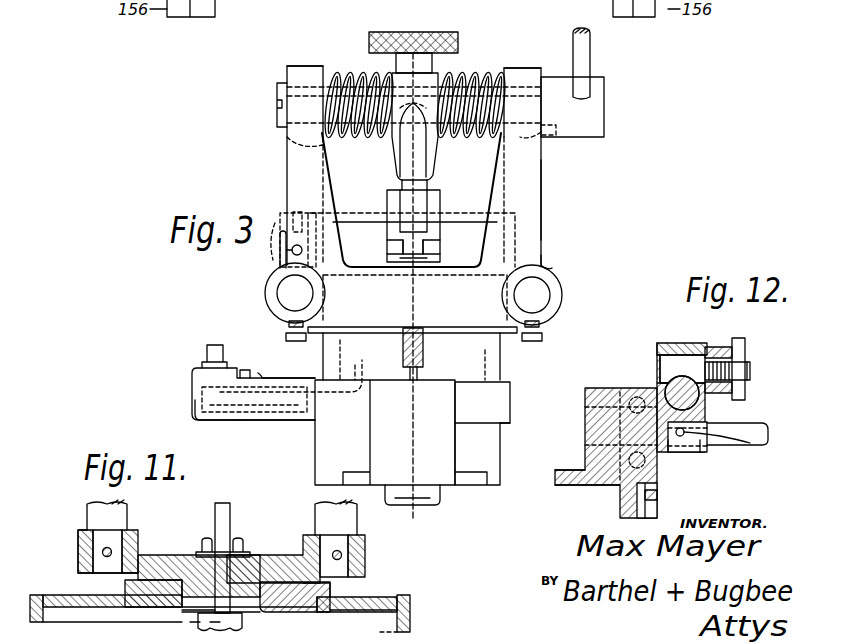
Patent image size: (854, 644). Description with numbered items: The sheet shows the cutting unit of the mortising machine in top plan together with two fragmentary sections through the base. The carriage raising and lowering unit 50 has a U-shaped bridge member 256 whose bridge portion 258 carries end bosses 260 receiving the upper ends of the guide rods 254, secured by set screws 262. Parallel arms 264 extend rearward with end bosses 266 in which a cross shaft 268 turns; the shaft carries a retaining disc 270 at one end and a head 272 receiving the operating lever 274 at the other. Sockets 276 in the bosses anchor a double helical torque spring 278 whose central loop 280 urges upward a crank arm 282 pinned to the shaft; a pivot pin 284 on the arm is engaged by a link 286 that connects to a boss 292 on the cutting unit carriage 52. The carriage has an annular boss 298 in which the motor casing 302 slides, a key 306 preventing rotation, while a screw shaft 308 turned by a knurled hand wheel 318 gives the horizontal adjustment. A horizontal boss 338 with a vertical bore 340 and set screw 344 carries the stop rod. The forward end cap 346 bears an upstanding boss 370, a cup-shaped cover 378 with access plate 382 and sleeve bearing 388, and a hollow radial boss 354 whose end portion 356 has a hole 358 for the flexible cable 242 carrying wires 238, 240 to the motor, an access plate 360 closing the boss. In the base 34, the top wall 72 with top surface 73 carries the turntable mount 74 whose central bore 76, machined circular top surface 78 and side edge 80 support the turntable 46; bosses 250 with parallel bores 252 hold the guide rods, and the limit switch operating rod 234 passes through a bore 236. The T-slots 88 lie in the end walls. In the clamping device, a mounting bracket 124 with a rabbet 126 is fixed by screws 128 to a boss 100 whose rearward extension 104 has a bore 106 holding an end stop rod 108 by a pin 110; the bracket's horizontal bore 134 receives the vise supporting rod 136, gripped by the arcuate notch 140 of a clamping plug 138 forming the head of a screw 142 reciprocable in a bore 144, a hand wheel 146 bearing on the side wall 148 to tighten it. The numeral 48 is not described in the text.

In FIG. 3, the knurled hand wheel 318 is at (446, 31).
In FIG. 3, the parallel arms 264 is at (287, 186).
In FIG. 3, the end bosses 266 is at (312, 66).
In FIG. 3, the bridge member 256 is at (545, 258).
In FIG. 3, the carriage raising and lowering unit 50 is at (556, 207).
In FIG. 3, the head 272 is at (604, 106).
In FIG. 3, the operating lever 274 is at (590, 47).
In FIG. 3, the retaining disc 270 is at (277, 97).
In FIG. 3, the sockets 276 is at (295, 146).
In FIG. 3, the double helical torque spring 278 is at (358, 72).
In FIG. 3, the cross shaft 268 is at (488, 72).
In FIG. 3, the central loop 280 is at (395, 152).
In FIG. 3, the crank arm 282 is at (427, 160).
In FIG. 3, the pivot pin 284 is at (432, 187).
In FIG. 3, the link 286 is at (441, 205).
In FIG. 3, the boss 292 is at (441, 238).
In FIG. 3, the annular boss 298 is at (356, 220).
In FIG. 3, the set screw 344 is at (298, 212).
In FIG. 3, the vertical bore 340 is at (275, 235).
In FIG. 3, the horizontal boss 338 is at (282, 259).
In FIG. 3, the end bosses 260 is at (268, 314).
In FIG. 3, the guide rods 254 is at (290, 293).
In FIG. 11, the guide rods 254 is at (125, 514).
In FIG. 3, the set screws 262 is at (292, 338).
In FIG. 3, the bridge portion 258 is at (375, 327).
In FIG. 3, the screw shaft 308 is at (424, 345).
In FIG. 3, the key 306 is at (410, 373).
In FIG. 3, the motor casing 302 is at (505, 360).
In FIG. 3, the forward end cap 346 is at (511, 388).
In FIG. 3, the upstanding boss 370 is at (445, 401).
In FIG. 3, the cup-shaped cover 378 is at (498, 452).
In FIG. 3, the cutting unit carriage 52 is at (515, 429).
In FIG. 3, the access plate 382 is at (477, 486).
In FIG. 3, the cup-shaped sleeve bearing 388 is at (428, 505).
In FIG. 3, the end portion 356 is at (195, 391).
In FIG. 3, the hole 358 is at (200, 372).
In FIG. 3, the flexible cable 242 is at (207, 350).
In FIG. 3, the wire 240 is at (250, 378).
In FIG. 3, the access plate 360 is at (296, 377).
In FIG. 3, the wire 238 is at (237, 421).
In FIG. 3, the hollow radial boss 354 is at (256, 421).
In FIG. 11, the clamp assembly 48 is at (74, 503).
In FIG. 11, the bosses 250 is at (78, 537).
In FIG. 11, the parallel bores 252 is at (78, 547).
In FIG. 11, the turntable 46 is at (279, 546).
In FIG. 11, the turntable mount 74 is at (125, 587).
In FIG. 11, the bore 236 is at (202, 553).
In FIG. 11, the limit switch operating rod 234 is at (222, 505).
In FIG. 11, the machined circular top surface 78 is at (277, 612).
In FIG. 11, the side edge 80 is at (322, 590).
In FIG. 11, the top surface 73 is at (392, 597).
In FIG. 11, the base 34 is at (419, 619).
In FIG. 11, the central bore 76 is at (195, 612).
In FIG. 11, the top wall 72 is at (368, 612).
In FIG. 12, the top wall 72 is at (568, 486).
In FIG. 12, the bosses 100 is at (600, 388).
In FIG. 12, the screws 128 is at (585, 407).
In FIG. 12, the T-slots 88 is at (660, 503).
In FIG. 12, the clamping plug 138 is at (680, 343).
In FIG. 12, the bore 144 is at (660, 343).
In FIG. 12, the mounting bracket 124 is at (692, 358).
In FIG. 12, the arcuate notch 140 is at (665, 383).
In FIG. 12, the vise supporting rod 136 is at (735, 396).
In FIG. 12, the rabbet 126 is at (660, 394).
In FIG. 12, the horizontal bore 134 is at (710, 416).
In FIG. 12, the end stop rod 108 is at (762, 424).
In FIG. 12, the pin 110 is at (740, 445).
In FIG. 12, the rearward extension 104 is at (683, 453).
In FIG. 12, the bore 106 is at (703, 455).
In FIG. 12, the screw 142 is at (750, 371).
In FIG. 12, the hand wheel 146 is at (745, 340).
In FIG. 12, the side wall 148 is at (716, 347).